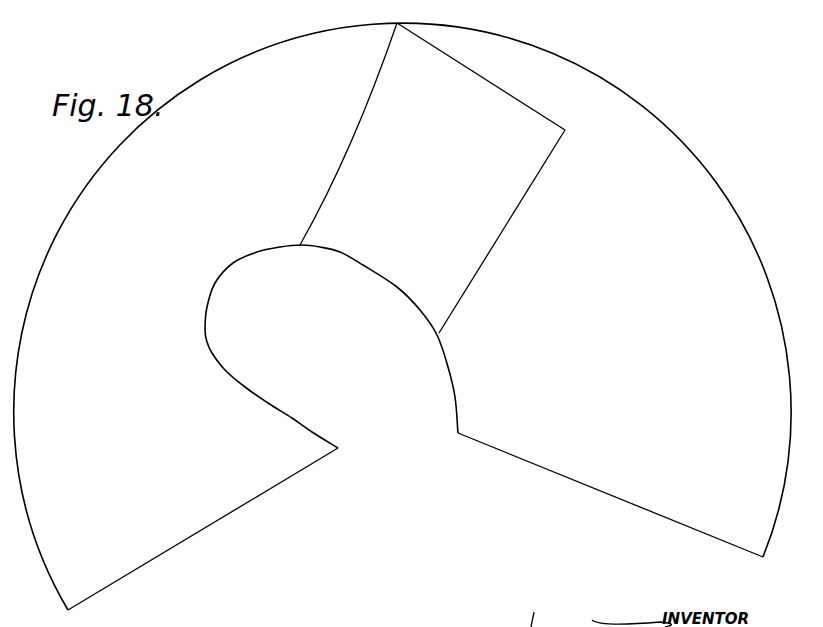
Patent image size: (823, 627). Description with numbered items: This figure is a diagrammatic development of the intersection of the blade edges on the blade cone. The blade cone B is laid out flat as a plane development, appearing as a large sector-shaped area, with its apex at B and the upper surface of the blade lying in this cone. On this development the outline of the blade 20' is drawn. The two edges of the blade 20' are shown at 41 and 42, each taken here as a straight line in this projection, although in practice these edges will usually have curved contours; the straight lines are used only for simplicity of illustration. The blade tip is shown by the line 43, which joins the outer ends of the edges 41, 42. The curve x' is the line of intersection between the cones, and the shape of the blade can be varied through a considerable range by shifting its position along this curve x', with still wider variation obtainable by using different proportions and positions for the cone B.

The blade cone B is at (272, 46).
The line of intersection between the cones x' is at (331, 338).
The blade 20' is at (432, 178).
The blade edge 41 is at (350, 144).
The blade edge 42 is at (504, 229).
The blade tip 43 is at (505, 91).